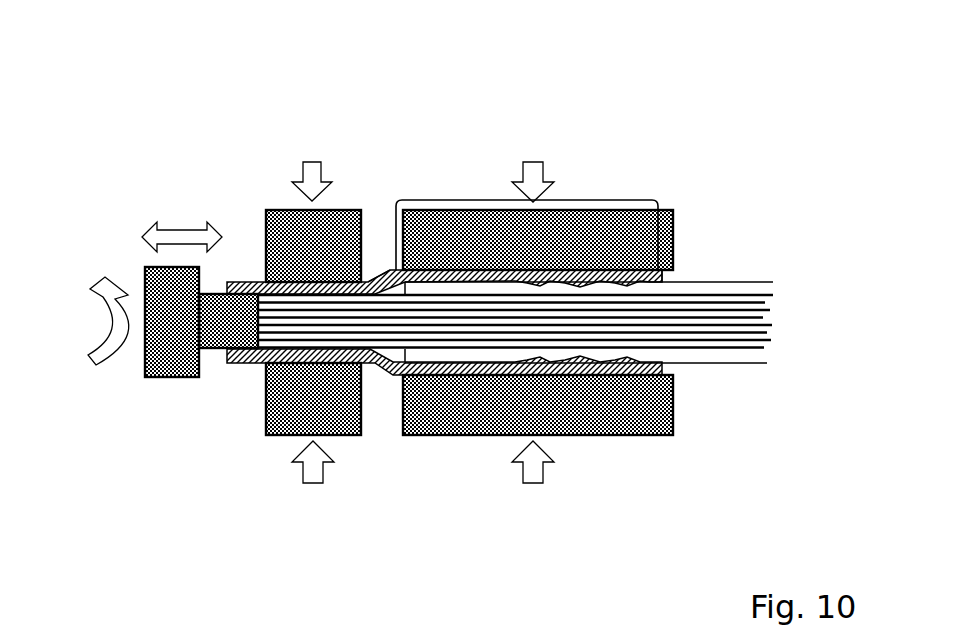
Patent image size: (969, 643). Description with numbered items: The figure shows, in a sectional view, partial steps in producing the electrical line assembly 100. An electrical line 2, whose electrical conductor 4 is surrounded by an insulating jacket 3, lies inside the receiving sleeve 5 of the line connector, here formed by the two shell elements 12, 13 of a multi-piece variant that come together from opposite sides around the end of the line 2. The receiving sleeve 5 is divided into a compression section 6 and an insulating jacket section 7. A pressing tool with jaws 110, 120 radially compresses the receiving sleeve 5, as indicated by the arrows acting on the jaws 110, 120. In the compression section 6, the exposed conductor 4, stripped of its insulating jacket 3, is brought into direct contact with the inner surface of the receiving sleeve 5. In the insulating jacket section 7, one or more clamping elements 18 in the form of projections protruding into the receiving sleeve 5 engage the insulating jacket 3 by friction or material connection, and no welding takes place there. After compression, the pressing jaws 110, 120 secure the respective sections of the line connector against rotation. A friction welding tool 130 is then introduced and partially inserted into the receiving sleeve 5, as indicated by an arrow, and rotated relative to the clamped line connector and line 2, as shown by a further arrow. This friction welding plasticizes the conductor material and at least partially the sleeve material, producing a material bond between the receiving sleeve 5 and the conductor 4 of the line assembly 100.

The electrical line assembly 100 is at (126, 112).
The friction welding tool 130 is at (167, 282).
The shell element 12 is at (250, 280).
The shell element 13 is at (242, 363).
The receiving sleeve 5 is at (381, 263).
The clamping element 18 is at (664, 269).
The electrical line 2 is at (737, 375).
The insulating jacket 3 is at (707, 287).
The electrical conductor 4 is at (748, 327).
The pressing jaw 110 is at (298, 410).
The pressing jaw 120 is at (467, 410).
The compression section 6 is at (235, 280).
The insulating jacket section 7 is at (488, 200).